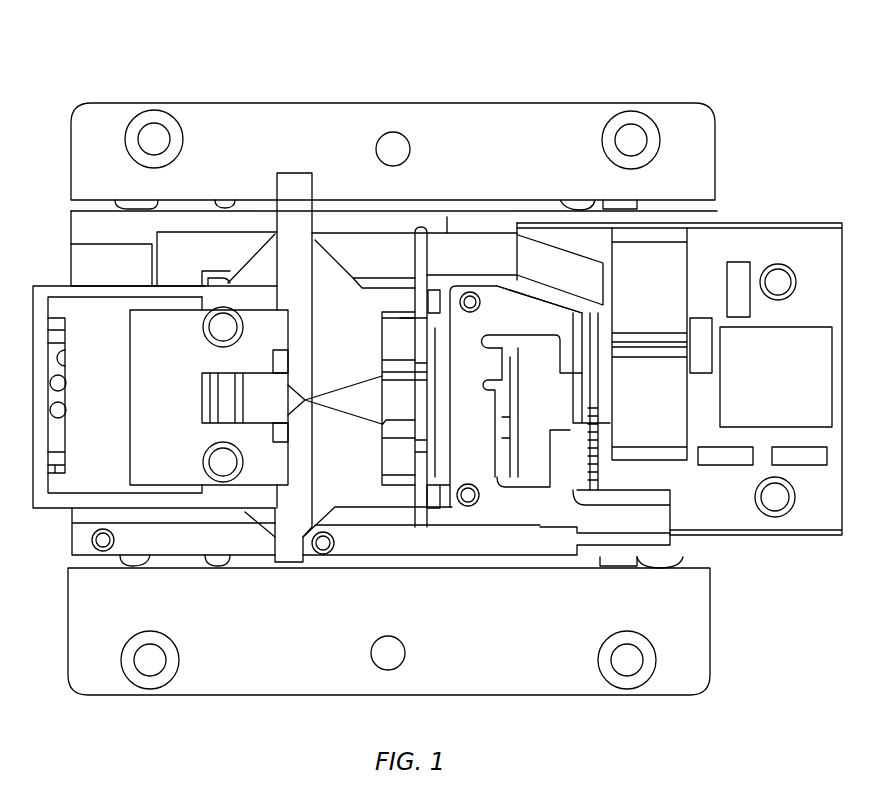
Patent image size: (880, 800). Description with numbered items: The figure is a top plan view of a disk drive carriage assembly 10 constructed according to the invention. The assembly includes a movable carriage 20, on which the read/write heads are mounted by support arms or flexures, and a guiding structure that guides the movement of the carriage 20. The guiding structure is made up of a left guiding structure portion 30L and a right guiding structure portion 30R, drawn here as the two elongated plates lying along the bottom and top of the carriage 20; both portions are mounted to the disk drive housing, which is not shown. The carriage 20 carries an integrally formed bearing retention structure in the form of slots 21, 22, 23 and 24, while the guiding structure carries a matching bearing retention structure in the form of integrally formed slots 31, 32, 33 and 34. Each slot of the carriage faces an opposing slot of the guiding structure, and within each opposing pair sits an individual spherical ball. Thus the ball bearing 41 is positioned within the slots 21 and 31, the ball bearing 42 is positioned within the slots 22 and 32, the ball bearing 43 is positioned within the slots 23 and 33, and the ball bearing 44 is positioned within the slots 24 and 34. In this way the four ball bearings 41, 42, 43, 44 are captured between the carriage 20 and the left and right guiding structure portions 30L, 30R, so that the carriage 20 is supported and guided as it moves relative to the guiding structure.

The carriage assembly 10 is at (705, 83).
The movable carriage 20 is at (843, 270).
The slot 21 is at (550, 560).
The slot 22 is at (88, 556).
The slot 23 is at (593, 280).
The slot 24 is at (93, 207).
The right guiding structure portion 30R is at (713, 117).
The left guiding structure portion 30L is at (710, 628).
The slot 31 is at (683, 570).
The slot 32 is at (220, 562).
The slot 33 is at (580, 208).
The slot 34 is at (222, 205).
The ball bearing 41 is at (640, 563).
The ball bearing 42 is at (133, 562).
The ball bearing 43 is at (590, 282).
The ball bearing 44 is at (128, 207).